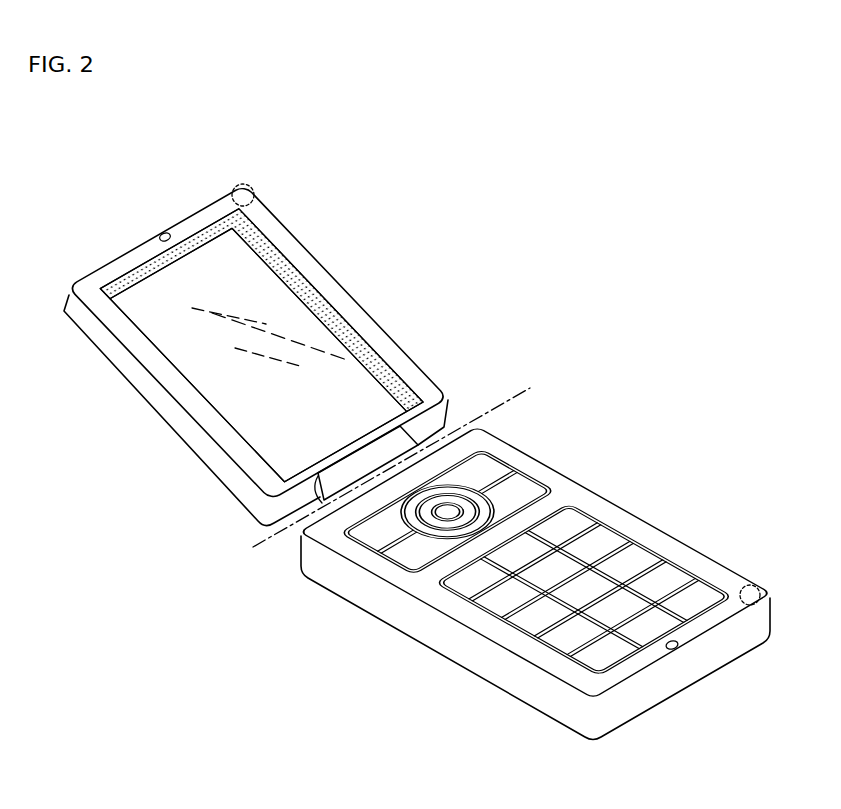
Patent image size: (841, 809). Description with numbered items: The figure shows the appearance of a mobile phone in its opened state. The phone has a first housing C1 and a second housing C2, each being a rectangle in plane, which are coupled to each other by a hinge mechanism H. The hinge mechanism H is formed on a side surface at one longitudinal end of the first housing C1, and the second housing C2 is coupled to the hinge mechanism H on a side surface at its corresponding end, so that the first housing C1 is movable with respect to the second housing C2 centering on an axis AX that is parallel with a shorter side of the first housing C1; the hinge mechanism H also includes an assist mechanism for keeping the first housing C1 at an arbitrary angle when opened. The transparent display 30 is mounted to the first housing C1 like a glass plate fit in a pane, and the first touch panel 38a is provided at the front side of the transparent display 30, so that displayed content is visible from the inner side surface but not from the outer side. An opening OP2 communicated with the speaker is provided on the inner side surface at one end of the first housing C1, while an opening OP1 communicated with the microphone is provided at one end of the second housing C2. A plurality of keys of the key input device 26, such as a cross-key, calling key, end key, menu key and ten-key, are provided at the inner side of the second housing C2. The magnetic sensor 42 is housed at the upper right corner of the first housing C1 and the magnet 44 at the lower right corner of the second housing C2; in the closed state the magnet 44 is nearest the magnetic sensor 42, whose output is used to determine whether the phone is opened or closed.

The magnetic sensor 42 is at (251, 187).
The opening OP2 is at (160, 235).
The transparent display 30 is at (293, 262).
The first touch panel 38a is at (300, 330).
The hinge mechanism H is at (403, 448).
The axis AX is at (402, 457).
The first housing C1 is at (168, 408).
The key input device 26 is at (572, 502).
The magnet 44 is at (762, 586).
The second housing C2 is at (423, 637).
The opening OP1 is at (683, 649).